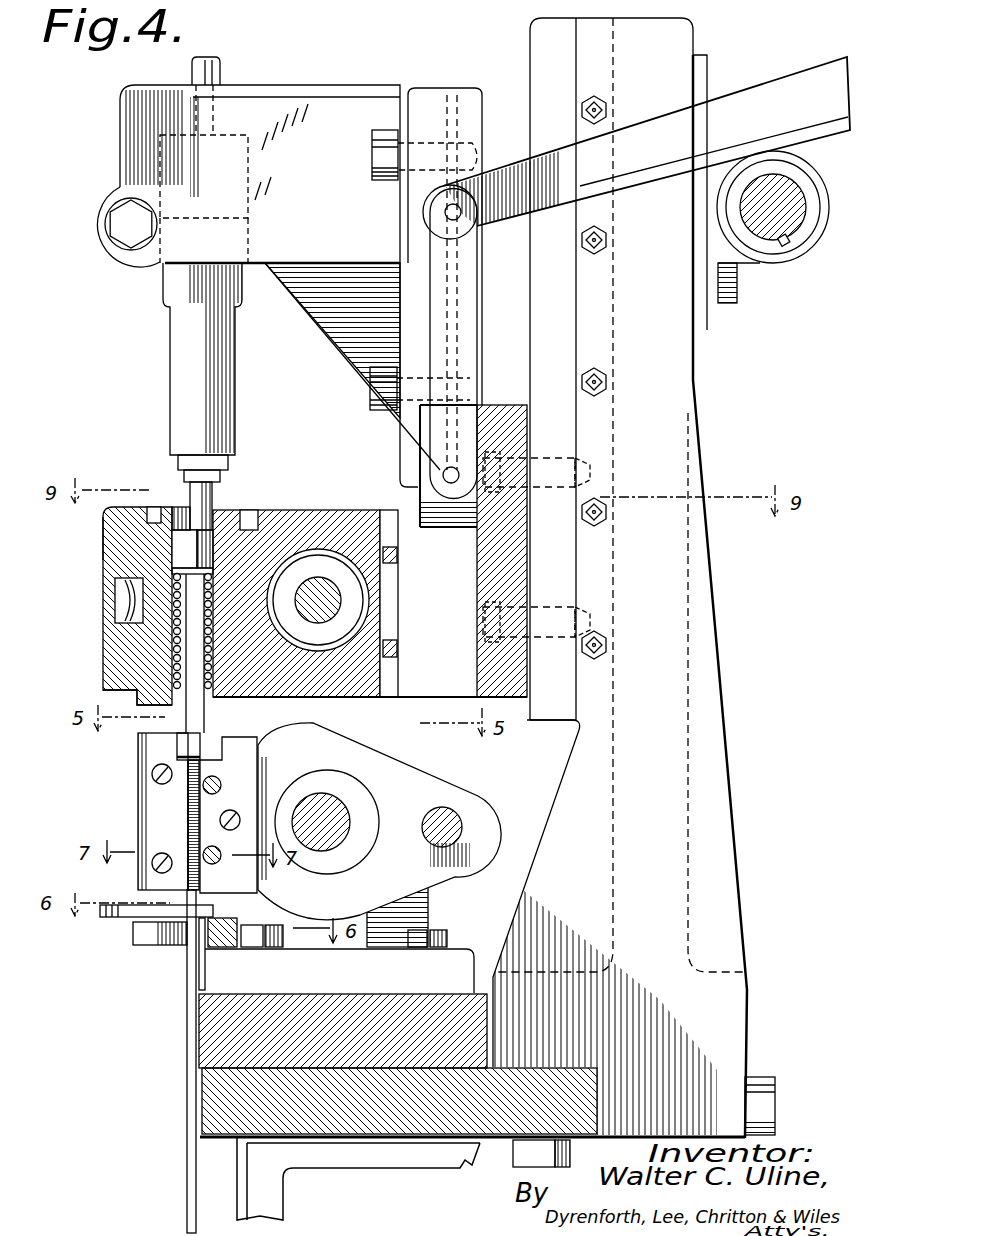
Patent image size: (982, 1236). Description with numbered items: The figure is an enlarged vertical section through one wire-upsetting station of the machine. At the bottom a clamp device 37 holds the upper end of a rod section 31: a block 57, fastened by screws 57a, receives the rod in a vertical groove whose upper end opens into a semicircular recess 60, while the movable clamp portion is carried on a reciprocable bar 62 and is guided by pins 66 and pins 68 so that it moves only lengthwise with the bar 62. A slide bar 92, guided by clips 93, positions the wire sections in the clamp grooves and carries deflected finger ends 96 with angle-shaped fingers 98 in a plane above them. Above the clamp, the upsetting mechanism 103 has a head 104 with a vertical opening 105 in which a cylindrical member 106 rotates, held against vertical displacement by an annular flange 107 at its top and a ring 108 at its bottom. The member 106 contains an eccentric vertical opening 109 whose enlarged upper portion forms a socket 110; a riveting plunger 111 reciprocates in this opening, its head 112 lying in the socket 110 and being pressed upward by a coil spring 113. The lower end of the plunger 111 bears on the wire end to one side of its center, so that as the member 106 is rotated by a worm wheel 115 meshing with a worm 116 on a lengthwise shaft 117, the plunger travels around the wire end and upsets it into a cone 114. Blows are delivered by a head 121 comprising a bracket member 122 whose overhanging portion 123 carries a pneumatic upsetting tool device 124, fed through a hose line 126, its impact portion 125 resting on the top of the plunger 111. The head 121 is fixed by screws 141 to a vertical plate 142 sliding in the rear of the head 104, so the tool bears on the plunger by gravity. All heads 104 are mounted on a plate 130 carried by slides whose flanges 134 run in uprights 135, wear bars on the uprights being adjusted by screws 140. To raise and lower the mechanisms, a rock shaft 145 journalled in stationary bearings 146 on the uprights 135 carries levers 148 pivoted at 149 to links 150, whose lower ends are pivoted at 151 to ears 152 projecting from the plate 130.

The head 121 is at (338, 108).
The overhanging portion 123 is at (270, 95).
The hose line 126 is at (192, 68).
The vertical plate 142 is at (472, 112).
The screws 141 is at (382, 160).
The links 150 is at (462, 344).
The pivot 149 is at (445, 212).
The pivot 151 is at (441, 473).
The levers 148 is at (775, 62).
The flanges 134 is at (603, 330).
The screws 140 is at (612, 244).
The uprights 135 is at (660, 373).
The rock shaft 145 is at (795, 236).
The stationary bearings 146 is at (745, 282).
The upsetting tool device 124 is at (168, 333).
The impact-producing portion 125 is at (215, 498).
The bracket member 122 is at (330, 325).
The annular flange 107 is at (152, 505).
The upsetting mechanism 103 is at (153, 447).
The opening 109 is at (103, 530).
The cylindrical member 106 is at (103, 548).
The socket portion 110 is at (177, 560).
The head 112 is at (173, 572).
The worm wheel 115 is at (103, 597).
The coil spring 113 is at (107, 632).
The riveting plunger 111 is at (103, 655).
The ring 108 is at (137, 692).
The head 104 is at (313, 545).
The vertical opening 105 is at (247, 537).
The worm 116 is at (332, 575).
The shaft 117 is at (370, 698).
The plate 130 is at (512, 585).
The ears 152 is at (580, 458).
The semi-circular recess 60 is at (176, 748).
The cone 114 is at (208, 752).
The block 57 is at (140, 790).
The screws 57a is at (150, 772).
The pins 68 is at (218, 787).
The clamp device 37 is at (171, 801).
The reciprocable bar 62 is at (345, 822).
The pins 66 is at (447, 828).
The fingers 98 is at (120, 914).
The deflected finger end 96 is at (180, 930).
The slide bar 92 is at (240, 952).
The clips 93 is at (206, 978).
The rod-section 31 is at (193, 1040).